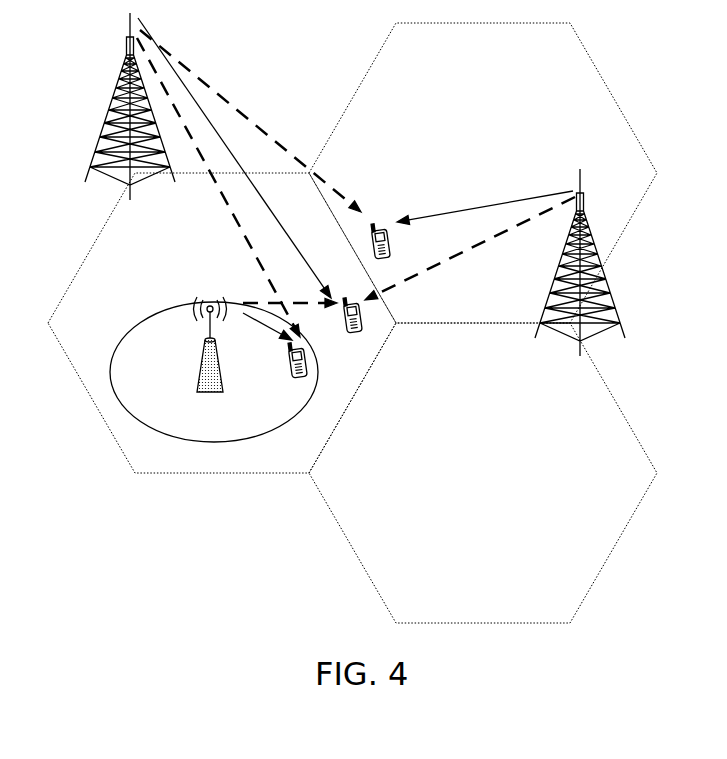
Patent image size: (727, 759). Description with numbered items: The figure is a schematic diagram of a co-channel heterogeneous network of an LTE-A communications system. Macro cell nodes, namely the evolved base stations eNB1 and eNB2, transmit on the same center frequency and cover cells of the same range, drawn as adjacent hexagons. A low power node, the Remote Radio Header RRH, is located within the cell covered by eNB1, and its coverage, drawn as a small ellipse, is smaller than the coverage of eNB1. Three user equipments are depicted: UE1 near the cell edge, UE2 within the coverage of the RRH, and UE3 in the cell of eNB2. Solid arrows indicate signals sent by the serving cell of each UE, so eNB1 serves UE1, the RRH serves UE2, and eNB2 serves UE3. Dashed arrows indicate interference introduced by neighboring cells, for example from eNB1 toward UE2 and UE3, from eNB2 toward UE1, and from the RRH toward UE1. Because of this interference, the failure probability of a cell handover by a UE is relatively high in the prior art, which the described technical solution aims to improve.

The evolved base station eNB1 is at (121, 106).
The evolved base station eNB2 is at (587, 262).
The user equipment UE1 is at (353, 328).
The user equipment UE2 is at (282, 371).
The user equipment UE3 is at (404, 240).
The Remote Radio Header RRH is at (214, 369).